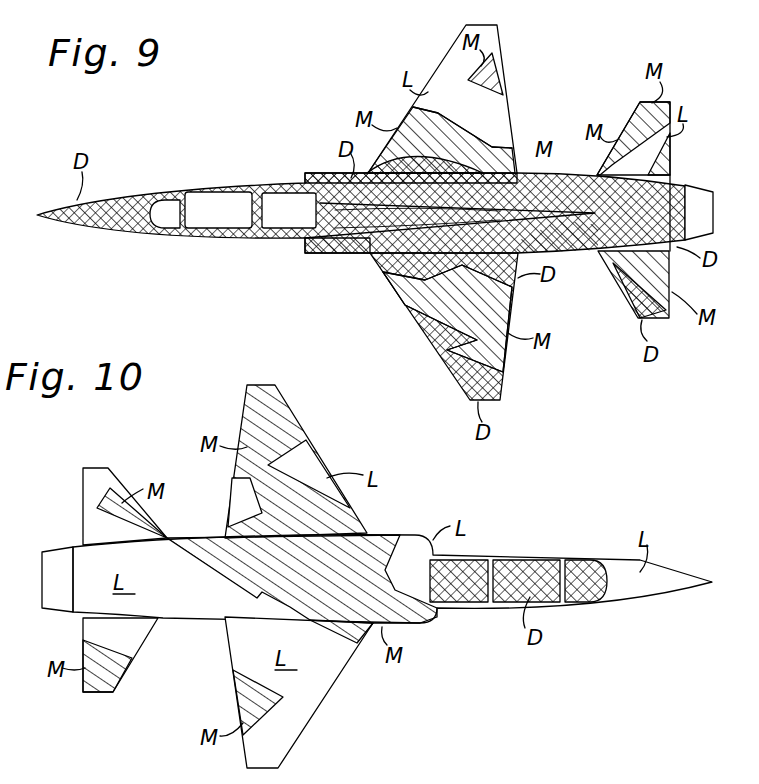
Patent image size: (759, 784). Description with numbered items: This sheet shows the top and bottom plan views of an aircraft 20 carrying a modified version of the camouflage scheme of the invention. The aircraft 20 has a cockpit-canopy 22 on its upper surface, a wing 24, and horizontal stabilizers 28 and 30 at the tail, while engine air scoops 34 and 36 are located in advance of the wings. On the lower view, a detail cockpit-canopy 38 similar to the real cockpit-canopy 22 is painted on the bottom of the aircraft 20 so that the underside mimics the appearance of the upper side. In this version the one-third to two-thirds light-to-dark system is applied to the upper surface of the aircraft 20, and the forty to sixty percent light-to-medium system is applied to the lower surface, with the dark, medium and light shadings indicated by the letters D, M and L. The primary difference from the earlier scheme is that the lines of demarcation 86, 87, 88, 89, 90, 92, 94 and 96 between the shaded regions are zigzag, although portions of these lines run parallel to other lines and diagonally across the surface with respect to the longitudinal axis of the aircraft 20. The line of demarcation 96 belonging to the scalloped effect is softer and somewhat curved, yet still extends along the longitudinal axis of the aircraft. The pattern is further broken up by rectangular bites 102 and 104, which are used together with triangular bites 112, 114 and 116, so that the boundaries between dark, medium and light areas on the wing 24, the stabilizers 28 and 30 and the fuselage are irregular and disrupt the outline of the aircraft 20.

In FIG. 9, the aircraft 20 is at (119, 171).
In FIG. 9, the cockpit-canopy 22 is at (221, 195).
In FIG. 9, the wing 24 is at (518, 122).
In FIG. 9, the horizontal stabilizer 28 is at (670, 152).
In FIG. 9, the horizontal stabilizer 30 is at (613, 263).
In FIG. 9, the engine air scoop 34 is at (308, 176).
In FIG. 9, the engine air scoop 36 is at (330, 257).
In FIG. 10, the detail cockpit-canopy 38 is at (533, 560).
In FIG. 9, the line of demarcation 86 is at (443, 120).
In FIG. 9, the line of demarcation 87 is at (437, 140).
In FIG. 9, the line of demarcation 88 is at (468, 275).
In FIG. 9, the line of demarcation 89 is at (428, 321).
In FIG. 9, the line of demarcation 90 is at (540, 205).
In FIG. 9, the line of demarcation 92 is at (618, 218).
In FIG. 9, the line of demarcation 94 is at (668, 307).
In FIG. 10, the line of demarcation 96 is at (230, 580).
In FIG. 9, the rectangular bite 102 is at (622, 128).
In FIG. 10, the rectangular bite 104 is at (150, 506).
In FIG. 9, the triangular bite 112 is at (501, 80).
In FIG. 10, the triangular bite 114 is at (333, 459).
In FIG. 10, the triangular bite 116 is at (247, 700).